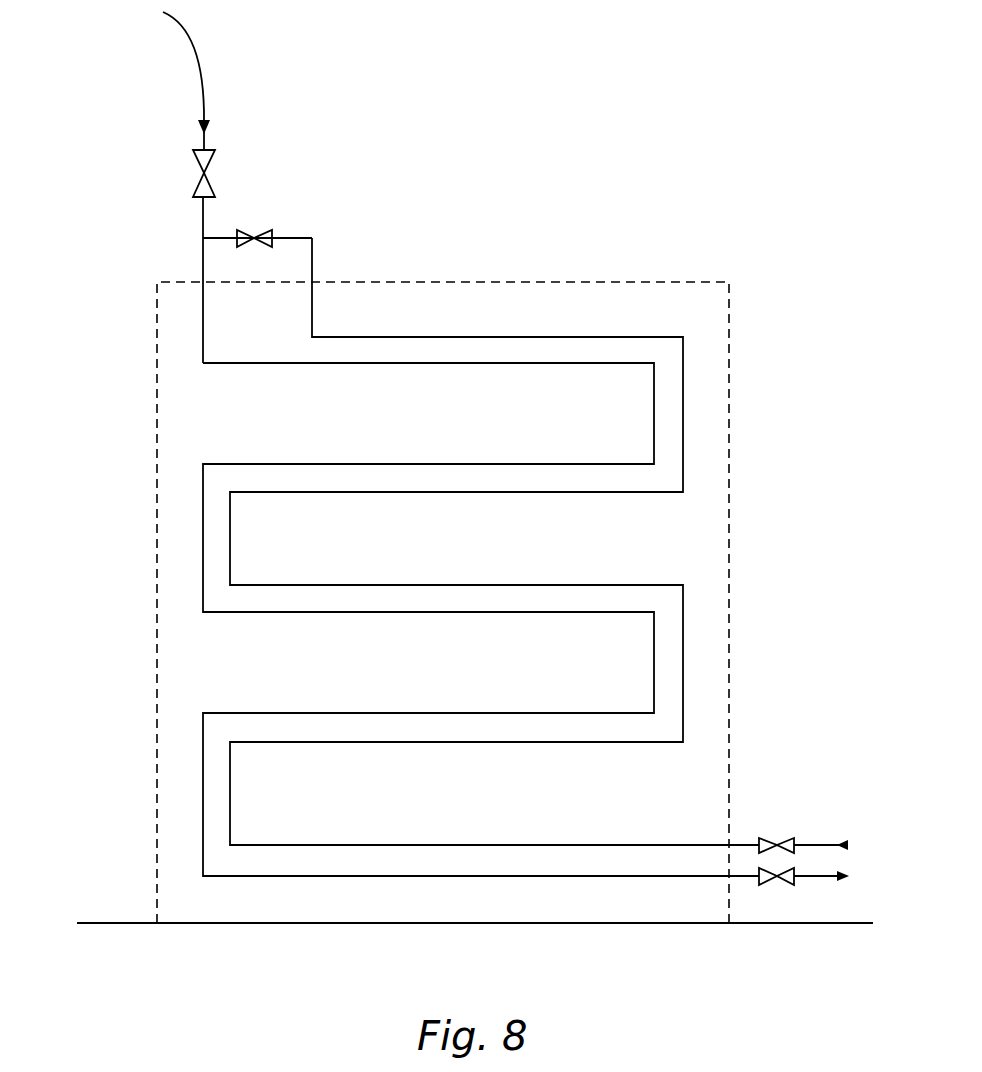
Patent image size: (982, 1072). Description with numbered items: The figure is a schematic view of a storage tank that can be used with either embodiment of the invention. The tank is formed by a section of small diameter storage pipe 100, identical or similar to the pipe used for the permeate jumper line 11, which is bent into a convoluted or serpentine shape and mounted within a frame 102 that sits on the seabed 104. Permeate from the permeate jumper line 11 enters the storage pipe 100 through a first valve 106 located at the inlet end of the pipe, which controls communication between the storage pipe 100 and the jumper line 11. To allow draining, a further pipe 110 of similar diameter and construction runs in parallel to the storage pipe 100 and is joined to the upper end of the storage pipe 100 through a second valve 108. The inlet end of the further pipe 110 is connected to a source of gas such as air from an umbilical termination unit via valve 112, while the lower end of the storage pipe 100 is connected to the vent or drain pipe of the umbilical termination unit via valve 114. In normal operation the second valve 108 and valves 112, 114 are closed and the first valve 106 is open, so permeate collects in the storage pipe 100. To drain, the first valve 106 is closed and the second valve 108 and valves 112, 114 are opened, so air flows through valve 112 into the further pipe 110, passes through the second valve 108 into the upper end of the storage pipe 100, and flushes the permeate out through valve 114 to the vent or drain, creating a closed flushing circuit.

The permeate jumper line 11 is at (195, 50).
The storage pipe 100 is at (202, 330).
The frame 102 is at (157, 623).
The seabed 104 is at (120, 922).
The first valve 106 is at (202, 185).
The second valve 108 is at (275, 228).
The further pipe 110 is at (453, 337).
The valve 112 is at (768, 840).
The valve 114 is at (764, 878).